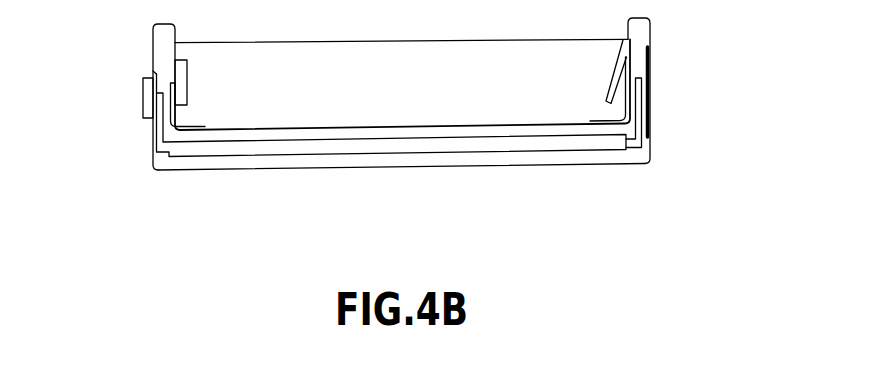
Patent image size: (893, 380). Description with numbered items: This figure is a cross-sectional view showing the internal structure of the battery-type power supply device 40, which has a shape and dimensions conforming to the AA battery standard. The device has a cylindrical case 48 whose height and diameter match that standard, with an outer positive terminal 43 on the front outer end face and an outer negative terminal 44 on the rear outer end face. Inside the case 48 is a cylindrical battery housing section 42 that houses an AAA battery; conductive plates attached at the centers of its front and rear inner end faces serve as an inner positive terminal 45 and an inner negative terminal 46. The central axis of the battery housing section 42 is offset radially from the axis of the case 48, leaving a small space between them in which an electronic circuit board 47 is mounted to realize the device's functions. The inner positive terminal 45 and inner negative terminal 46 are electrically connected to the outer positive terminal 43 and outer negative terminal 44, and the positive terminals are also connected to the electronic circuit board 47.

The battery-type power supply device 40 is at (331, 183).
The battery housing section 42 is at (473, 63).
The outer positive terminal 43 is at (144, 100).
The outer negative terminal 44 is at (645, 88).
The inner positive terminal 45 is at (187, 70).
The inner negative terminal 46 is at (622, 43).
The electronic circuit board 47 is at (553, 152).
The case 48 is at (390, 169).